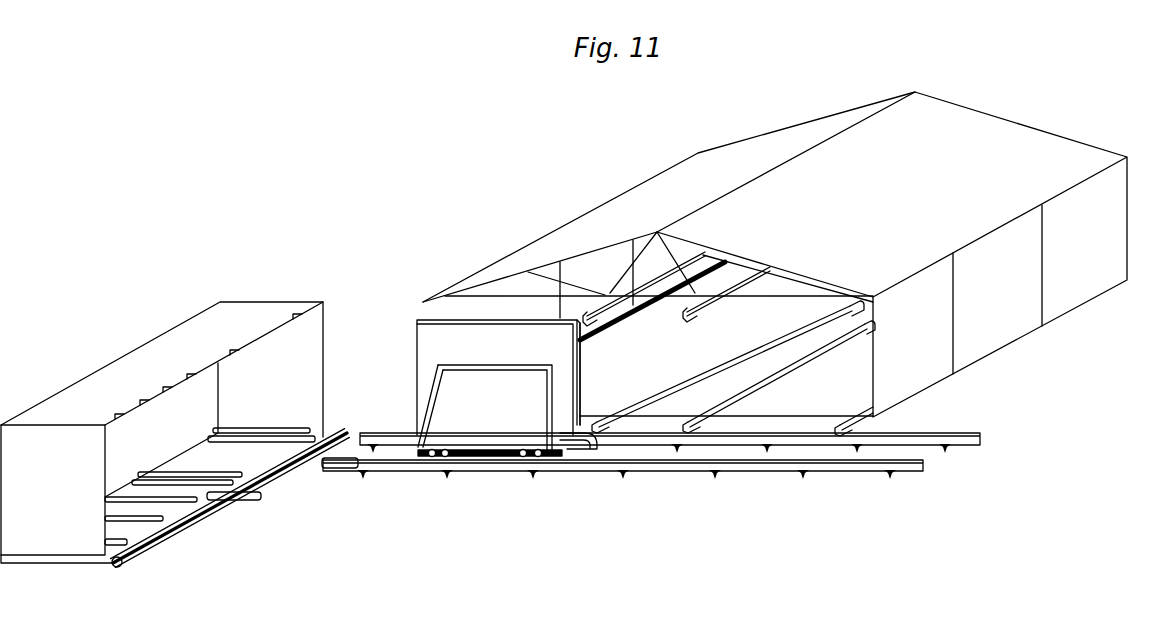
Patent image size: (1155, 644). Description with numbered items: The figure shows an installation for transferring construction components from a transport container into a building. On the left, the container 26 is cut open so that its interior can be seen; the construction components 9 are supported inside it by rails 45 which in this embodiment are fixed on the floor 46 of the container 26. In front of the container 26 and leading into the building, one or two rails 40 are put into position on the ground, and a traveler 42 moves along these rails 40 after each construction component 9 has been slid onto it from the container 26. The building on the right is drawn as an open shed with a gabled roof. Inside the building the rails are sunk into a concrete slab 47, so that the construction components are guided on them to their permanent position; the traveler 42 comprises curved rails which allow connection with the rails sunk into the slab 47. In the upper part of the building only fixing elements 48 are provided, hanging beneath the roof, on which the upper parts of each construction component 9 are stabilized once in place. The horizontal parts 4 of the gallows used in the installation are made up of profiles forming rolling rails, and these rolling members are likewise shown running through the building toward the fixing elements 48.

The horizontal parts of gallows 4 is at (660, 392).
The construction component 9 is at (490, 335).
The container 26 is at (92, 445).
The rolling rails 40 is at (571, 468).
The traveler 42 is at (487, 443).
The rails 45 is at (290, 432).
The floor of the container 46 is at (257, 460).
The concrete slab 47 is at (823, 390).
The fixing elements 48 is at (595, 297).